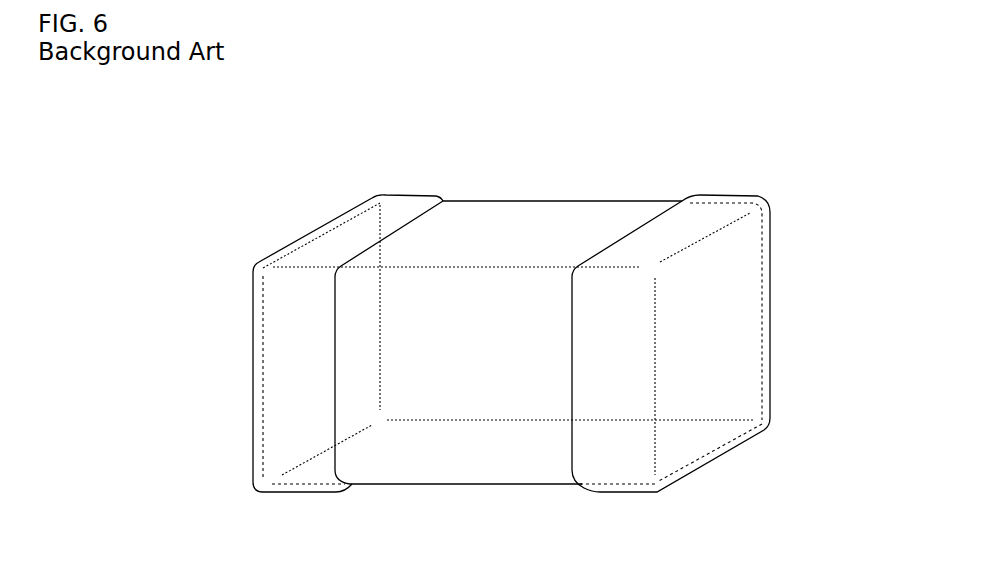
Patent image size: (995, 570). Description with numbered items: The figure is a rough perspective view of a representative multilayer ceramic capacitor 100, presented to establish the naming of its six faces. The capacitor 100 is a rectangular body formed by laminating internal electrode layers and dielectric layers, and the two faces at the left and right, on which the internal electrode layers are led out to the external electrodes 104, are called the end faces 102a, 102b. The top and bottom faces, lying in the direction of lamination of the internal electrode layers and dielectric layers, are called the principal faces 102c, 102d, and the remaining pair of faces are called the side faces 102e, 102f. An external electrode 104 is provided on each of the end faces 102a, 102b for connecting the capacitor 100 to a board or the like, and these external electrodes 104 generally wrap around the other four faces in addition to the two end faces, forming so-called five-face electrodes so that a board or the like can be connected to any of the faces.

The multilayer ceramic capacitor 100 is at (732, 170).
The end face 102a is at (284, 350).
The end face 102b is at (743, 302).
The principal face 102c is at (510, 220).
The principal face 102d is at (520, 463).
The side face 102e is at (425, 453).
The side face 102f is at (585, 228).
The external electrode 104 is at (737, 347).